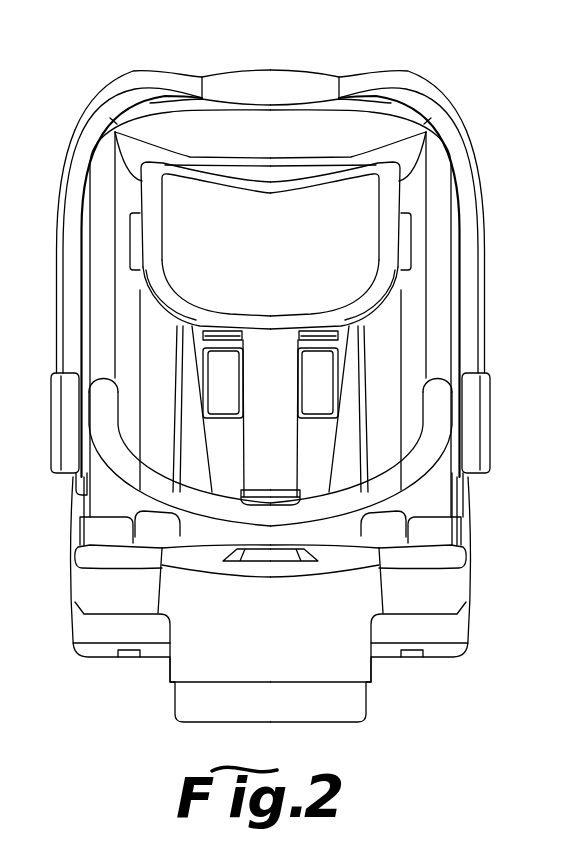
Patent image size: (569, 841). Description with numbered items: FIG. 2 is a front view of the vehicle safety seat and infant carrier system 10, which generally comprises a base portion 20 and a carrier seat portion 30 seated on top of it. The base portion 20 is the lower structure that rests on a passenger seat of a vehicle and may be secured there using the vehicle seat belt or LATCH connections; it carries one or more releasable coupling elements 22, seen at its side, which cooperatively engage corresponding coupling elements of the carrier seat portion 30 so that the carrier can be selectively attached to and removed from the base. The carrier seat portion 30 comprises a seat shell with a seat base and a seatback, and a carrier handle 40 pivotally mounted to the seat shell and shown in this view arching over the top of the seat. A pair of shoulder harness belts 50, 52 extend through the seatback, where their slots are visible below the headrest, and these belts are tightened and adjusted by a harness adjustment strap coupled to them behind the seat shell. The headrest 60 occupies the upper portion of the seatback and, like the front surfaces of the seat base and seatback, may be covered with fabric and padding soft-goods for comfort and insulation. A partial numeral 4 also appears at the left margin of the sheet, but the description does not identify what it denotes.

The vehicle safety seat and infant carrier system 10 is at (272, 388).
The base portion 20 is at (341, 661).
The releasable coupling elements 22 is at (455, 503).
The carrier seat portion 30 is at (505, 336).
The carrier handle 40 is at (113, 91).
The shoulder harness belt 50 is at (222, 373).
The shoulder harness belt 52 is at (318, 372).
The headrest 60 is at (230, 210).
The side latch 4 is at (43, 487).